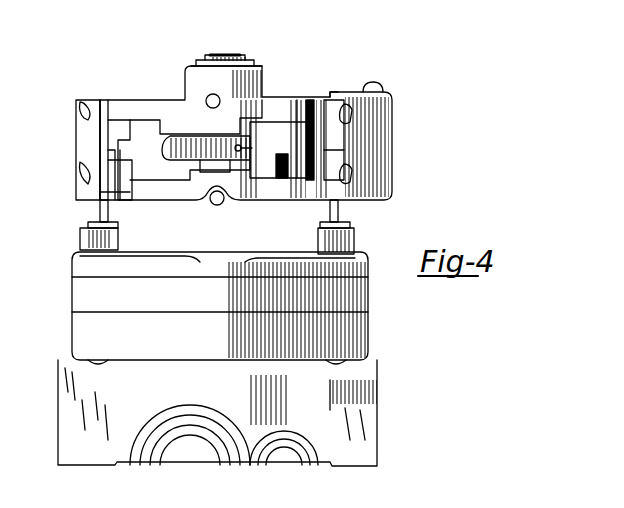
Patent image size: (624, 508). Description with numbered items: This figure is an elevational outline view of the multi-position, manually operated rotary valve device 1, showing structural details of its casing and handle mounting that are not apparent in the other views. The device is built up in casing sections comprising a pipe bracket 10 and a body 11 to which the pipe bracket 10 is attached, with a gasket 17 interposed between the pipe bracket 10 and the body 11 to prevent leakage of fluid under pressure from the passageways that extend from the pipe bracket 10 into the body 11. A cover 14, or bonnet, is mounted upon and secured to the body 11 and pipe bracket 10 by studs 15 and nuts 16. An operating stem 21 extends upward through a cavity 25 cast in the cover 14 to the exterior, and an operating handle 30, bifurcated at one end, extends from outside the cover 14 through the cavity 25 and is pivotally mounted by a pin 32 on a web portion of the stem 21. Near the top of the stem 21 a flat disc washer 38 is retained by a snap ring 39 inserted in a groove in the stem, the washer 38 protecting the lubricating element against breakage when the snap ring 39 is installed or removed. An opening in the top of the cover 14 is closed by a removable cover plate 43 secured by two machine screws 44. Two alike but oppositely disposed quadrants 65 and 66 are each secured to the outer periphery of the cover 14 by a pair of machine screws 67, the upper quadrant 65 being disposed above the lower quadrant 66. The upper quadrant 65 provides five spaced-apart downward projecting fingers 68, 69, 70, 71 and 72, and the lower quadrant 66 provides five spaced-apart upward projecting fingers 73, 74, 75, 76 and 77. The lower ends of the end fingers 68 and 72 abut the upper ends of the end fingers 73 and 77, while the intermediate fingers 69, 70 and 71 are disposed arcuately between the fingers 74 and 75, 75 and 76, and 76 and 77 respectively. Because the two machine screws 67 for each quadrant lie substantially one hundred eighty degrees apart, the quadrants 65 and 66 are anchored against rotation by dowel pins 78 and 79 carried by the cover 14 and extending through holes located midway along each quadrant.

The rotary valve device 1 is at (360, 271).
The pipe bracket 10 is at (370, 430).
The body 11 is at (356, 296).
The cover 14 is at (340, 210).
The stud 15 is at (90, 228).
The nut 16 is at (80, 244).
The gasket 17 is at (362, 313).
The operating stem 21 is at (228, 57).
The cavity 25 is at (296, 122).
The operating handle 30 is at (178, 158).
The pin 32 is at (242, 150).
The flat disc washer 38 is at (196, 64).
The snap ring 39 is at (215, 58).
The cover plate 43 is at (332, 96).
The machine screws 44 is at (380, 86).
The quadrant 65 is at (98, 102).
The quadrant 66 is at (100, 194).
The machine screws 67 is at (80, 110).
The finger 68 is at (94, 142).
The finger 69 is at (152, 130).
The finger 70 is at (255, 128).
The finger 71 is at (310, 102).
The finger 72 is at (342, 142).
The finger 73 is at (106, 152).
The finger 74 is at (124, 170).
The finger 75 is at (193, 172).
The finger 76 is at (286, 162).
The finger 77 is at (342, 154).
The dowel pin 78 is at (206, 100).
The dowel pin 79 is at (217, 206).